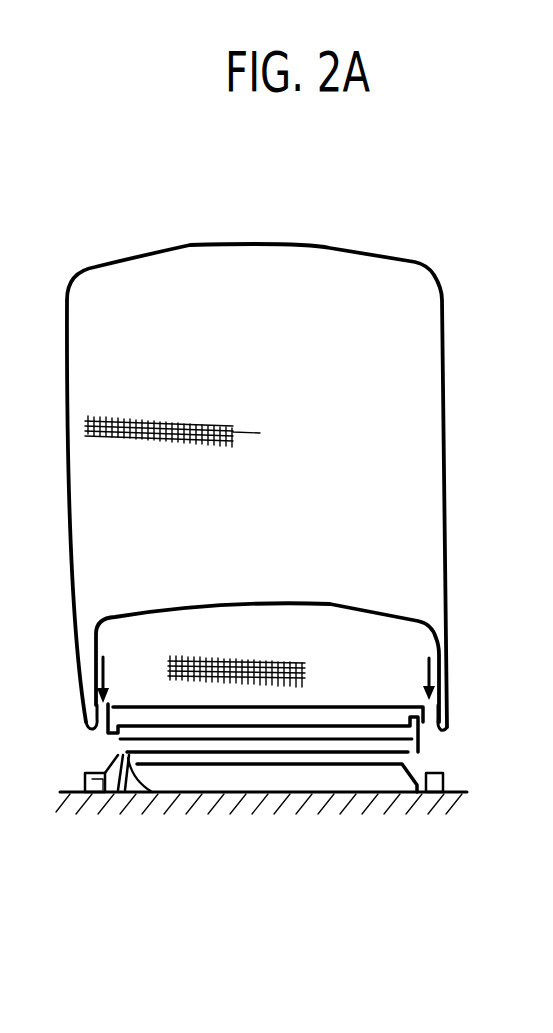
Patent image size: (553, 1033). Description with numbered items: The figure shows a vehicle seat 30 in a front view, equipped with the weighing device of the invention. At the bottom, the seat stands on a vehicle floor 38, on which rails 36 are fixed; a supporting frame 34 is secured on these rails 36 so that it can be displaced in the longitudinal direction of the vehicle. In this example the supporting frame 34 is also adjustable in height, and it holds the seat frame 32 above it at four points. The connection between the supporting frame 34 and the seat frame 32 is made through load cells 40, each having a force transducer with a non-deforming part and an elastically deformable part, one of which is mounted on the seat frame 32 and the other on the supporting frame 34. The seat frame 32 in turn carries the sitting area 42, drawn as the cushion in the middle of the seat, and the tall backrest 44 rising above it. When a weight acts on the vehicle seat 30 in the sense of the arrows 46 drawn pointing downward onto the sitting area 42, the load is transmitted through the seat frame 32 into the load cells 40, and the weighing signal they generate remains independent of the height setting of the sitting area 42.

The vehicle seat 30 is at (297, 517).
The backrest 44 is at (452, 453).
The sitting area 42 is at (378, 602).
The arrows 46 is at (446, 681).
The seat frame 32 is at (442, 722).
The load cells 40 is at (432, 740).
The supporting frame 34 is at (126, 770).
The rails 36 is at (106, 795).
The vehicle floor 38 is at (86, 797).